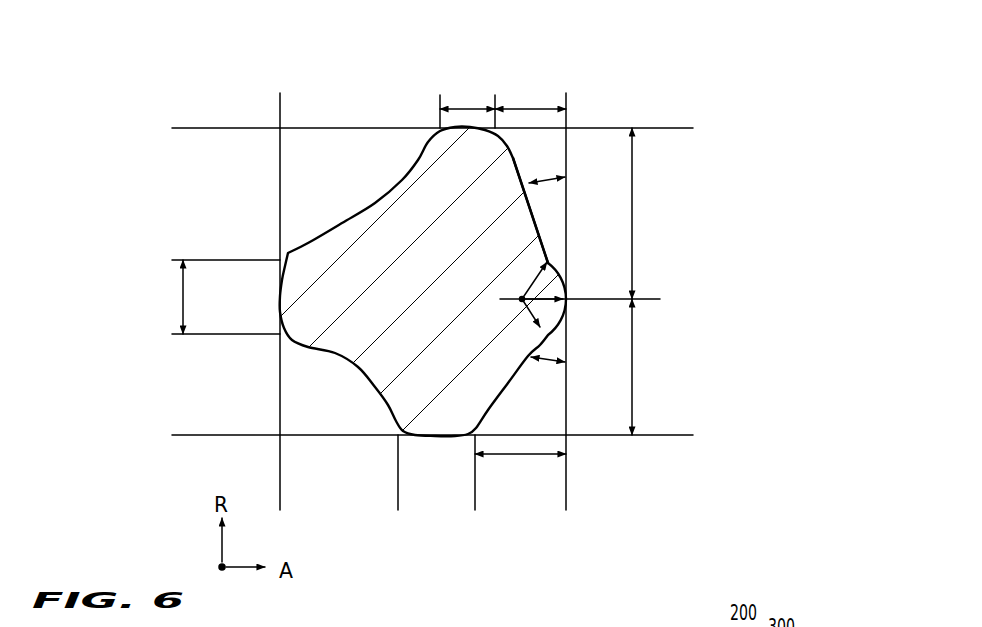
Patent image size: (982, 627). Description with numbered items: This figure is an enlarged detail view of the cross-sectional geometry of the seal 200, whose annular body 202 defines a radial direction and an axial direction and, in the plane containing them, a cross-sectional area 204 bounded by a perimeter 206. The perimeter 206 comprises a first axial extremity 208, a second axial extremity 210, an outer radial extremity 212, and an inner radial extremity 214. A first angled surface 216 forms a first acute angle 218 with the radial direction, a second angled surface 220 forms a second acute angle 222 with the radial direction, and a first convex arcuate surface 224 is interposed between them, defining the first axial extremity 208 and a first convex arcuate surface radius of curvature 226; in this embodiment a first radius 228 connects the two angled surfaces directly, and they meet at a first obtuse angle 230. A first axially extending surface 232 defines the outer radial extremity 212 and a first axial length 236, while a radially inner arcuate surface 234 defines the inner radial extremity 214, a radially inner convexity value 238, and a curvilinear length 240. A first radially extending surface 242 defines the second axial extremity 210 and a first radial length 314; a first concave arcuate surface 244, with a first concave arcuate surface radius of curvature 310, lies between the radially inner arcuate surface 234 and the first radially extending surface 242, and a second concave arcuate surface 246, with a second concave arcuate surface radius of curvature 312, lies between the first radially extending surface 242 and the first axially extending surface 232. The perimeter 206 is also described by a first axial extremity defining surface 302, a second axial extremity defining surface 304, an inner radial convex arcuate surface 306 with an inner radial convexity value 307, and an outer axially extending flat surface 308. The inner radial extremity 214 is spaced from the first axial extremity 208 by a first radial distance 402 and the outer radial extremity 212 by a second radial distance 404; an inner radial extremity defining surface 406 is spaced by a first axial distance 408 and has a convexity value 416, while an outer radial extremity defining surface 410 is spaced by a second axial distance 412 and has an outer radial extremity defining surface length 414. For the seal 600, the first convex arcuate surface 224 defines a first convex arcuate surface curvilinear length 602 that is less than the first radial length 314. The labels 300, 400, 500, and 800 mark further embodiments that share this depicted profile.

The seal 200 is at (435, 249).
The annular body 202 is at (528, 97).
The cross-sectional area 204 is at (437, 294).
The perimeter 206 is at (515, 172).
The first axial extremity 208 is at (649, 322).
The second axial extremity 210 is at (216, 254).
The outer radial extremity 212 is at (440, 126).
The inner radial extremity 214 is at (349, 482).
The first angled surface 216 is at (531, 197).
The first acute angle 218 is at (538, 180).
The second angled surface 220 is at (489, 406).
The second acute angle 222 is at (544, 364).
The first convex arcuate surface 224 is at (669, 272).
The first convex arcuate surface radius of curvature 226 is at (520, 299).
The first radius 228 is at (669, 272).
The first obtuse angle 230 is at (540, 276).
The first axially extending surface 232 is at (476, 74).
The radially inner arcuate surface 234 is at (516, 509).
The first axial length 236 is at (448, 81).
The radially inner convexity value 238 is at (426, 502).
The curvilinear length 240 is at (516, 509).
The first radially extending surface 242 is at (285, 285).
The first concave arcuate surface 244 is at (328, 349).
The second concave arcuate surface 246 is at (322, 238).
The profile 300 is at (811, 67).
The first axial extremity defining surface 302 is at (566, 300).
The second axial extremity defining surface 304 is at (279, 297).
The inner radial convex arcuate surface 306 is at (473, 455).
The inner radial convexity value 307 is at (426, 502).
The outer axially extending flat surface 308 is at (365, 74).
The first concave arcuate surface radius of curvature 310 is at (376, 392).
The second concave arcuate surface radius of curvature 312 is at (376, 204).
The first radial length 314 is at (183, 298).
The profile 400 is at (811, 67).
The first radial distance 402 is at (632, 353).
The second radial distance 404 is at (632, 187).
The inner radial extremity defining surface 406 is at (402, 438).
The first axial distance 408 is at (546, 455).
The outer radial extremity defining surface 410 is at (446, 127).
The width 412 is at (543, 107).
The outer radial extremity defining surface length 414 is at (474, 108).
The convexity value 416 is at (460, 437).
The profile 500 is at (811, 67).
The seal 600 is at (811, 67).
The first convex arcuate surface curvilinear length 602 is at (566, 295).
The profile 800 is at (708, 86).